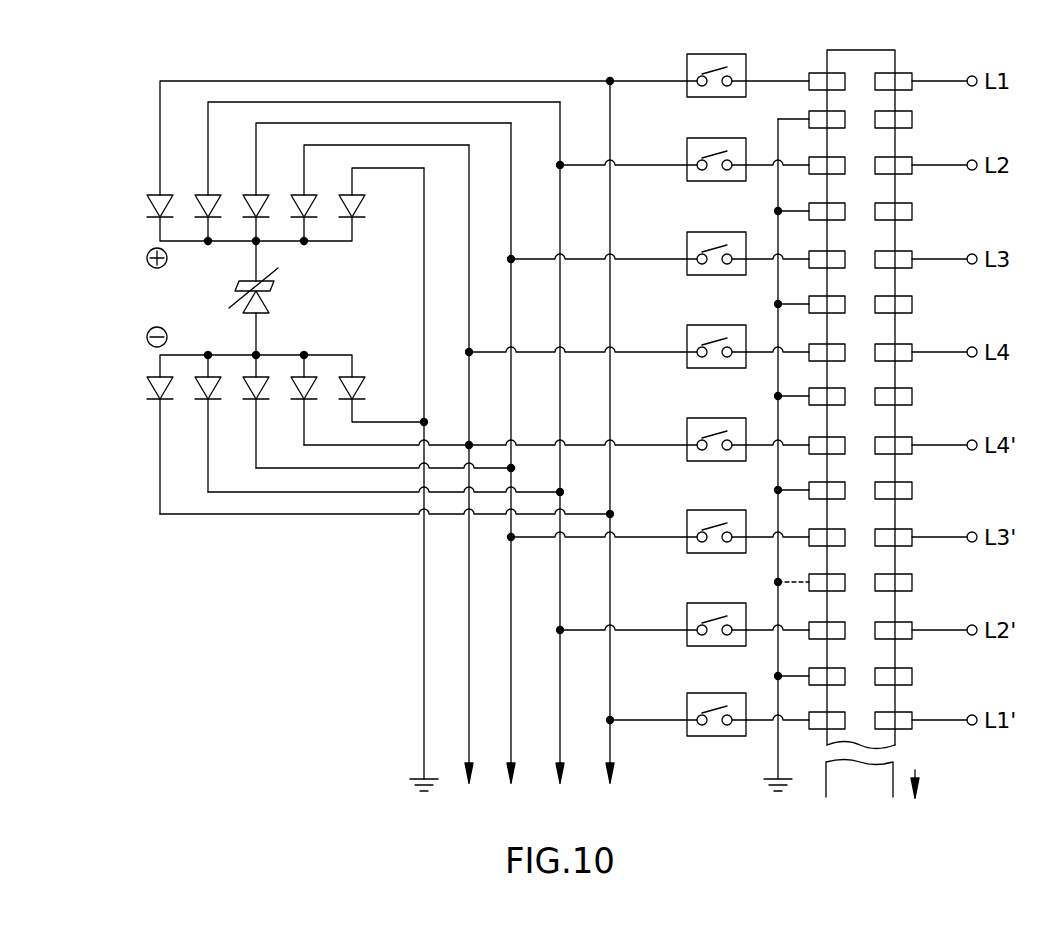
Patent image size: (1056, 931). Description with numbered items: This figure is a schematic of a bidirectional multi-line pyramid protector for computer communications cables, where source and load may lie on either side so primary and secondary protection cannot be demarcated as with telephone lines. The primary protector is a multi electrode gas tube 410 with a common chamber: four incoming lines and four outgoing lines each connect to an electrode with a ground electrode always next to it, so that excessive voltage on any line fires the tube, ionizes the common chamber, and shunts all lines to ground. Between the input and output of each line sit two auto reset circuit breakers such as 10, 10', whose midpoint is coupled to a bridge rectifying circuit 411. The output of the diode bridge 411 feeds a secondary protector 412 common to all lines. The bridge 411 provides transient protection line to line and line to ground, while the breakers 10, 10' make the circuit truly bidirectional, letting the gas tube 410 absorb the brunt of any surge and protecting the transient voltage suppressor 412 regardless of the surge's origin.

The auto reset circuit breaker 10 is at (686, 70).
The auto reset circuit breaker 10' is at (693, 702).
The multi electrode gas tube 410 is at (882, 50).
The bridge rectifying circuit 411 is at (205, 314).
The secondary protector 412 is at (265, 310).